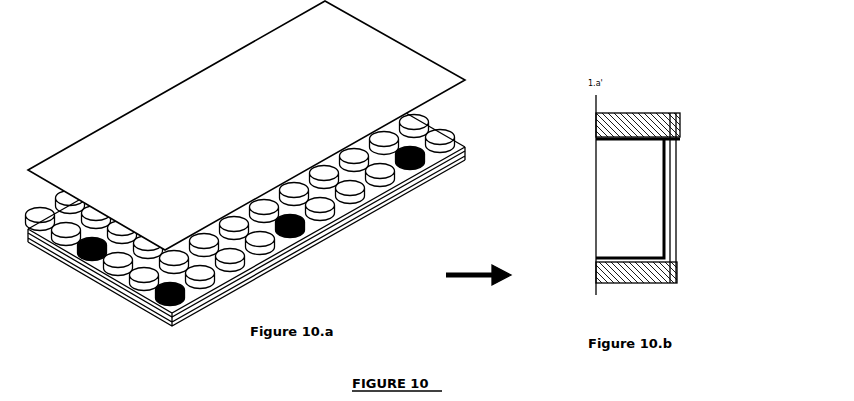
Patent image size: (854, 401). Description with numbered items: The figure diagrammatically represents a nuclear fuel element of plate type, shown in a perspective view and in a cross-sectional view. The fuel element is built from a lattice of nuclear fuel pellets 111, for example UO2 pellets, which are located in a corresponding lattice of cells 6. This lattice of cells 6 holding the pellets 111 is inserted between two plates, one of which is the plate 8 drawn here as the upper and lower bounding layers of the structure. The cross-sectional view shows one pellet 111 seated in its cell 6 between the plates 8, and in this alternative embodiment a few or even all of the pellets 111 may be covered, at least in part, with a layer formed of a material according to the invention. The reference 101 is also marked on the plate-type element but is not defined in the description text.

In FIG. 10.a, the cell 6 is at (240, 210).
In FIG. 10.b, the cell 6 is at (681, 176).
In FIG. 10.a, the plate 8 is at (166, 342).
In FIG. 10.b, the plate 8 is at (631, 298).
In FIG. 10.a, the nuclear fuel pellet 111 is at (416, 192).
In FIG. 10.b, the nuclear fuel pellet 111 is at (727, 232).
In FIG. 10.a, the assembly 101 is at (479, 107).